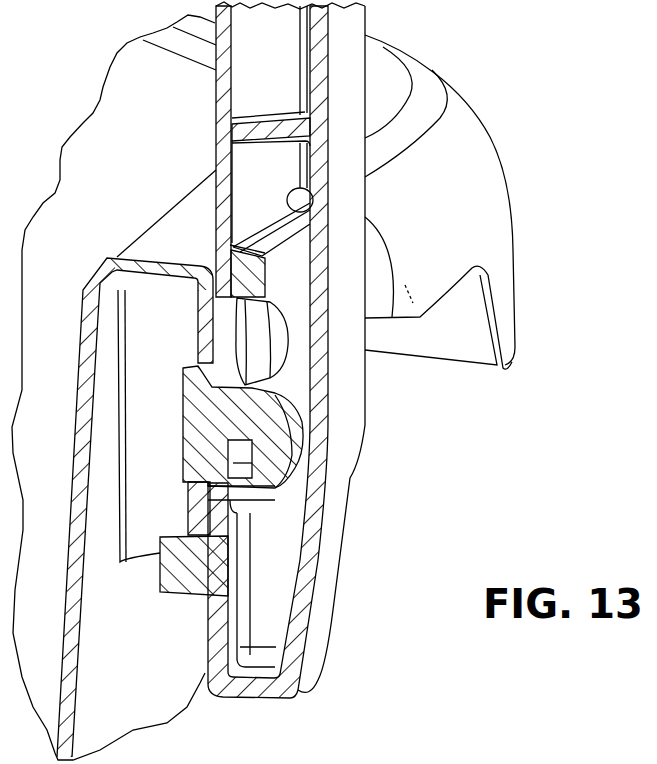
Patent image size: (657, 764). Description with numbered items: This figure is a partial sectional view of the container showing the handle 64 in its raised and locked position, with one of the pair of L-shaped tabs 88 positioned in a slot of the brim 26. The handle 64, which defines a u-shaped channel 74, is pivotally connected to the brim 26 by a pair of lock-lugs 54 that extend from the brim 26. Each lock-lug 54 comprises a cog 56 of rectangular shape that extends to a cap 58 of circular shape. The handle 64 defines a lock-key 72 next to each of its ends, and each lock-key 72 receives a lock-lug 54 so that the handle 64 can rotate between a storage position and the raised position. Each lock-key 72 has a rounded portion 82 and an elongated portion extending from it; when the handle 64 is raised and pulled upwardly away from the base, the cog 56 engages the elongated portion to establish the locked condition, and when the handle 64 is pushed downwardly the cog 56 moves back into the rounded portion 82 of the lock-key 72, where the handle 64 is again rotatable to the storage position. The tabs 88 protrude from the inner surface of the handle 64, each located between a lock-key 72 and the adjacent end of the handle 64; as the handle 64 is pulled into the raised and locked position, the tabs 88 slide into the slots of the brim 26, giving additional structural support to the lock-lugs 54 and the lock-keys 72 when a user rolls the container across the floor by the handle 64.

The brim 26 is at (467, 145).
The lock-lug 54 is at (313, 443).
The cog 56 is at (258, 388).
The cap 58 is at (295, 460).
The handle 64 is at (352, 90).
The lock-key 72 is at (294, 329).
The u-shaped channel 74 is at (300, 213).
The rounded portion 82 is at (283, 350).
The tab 88 is at (205, 597).